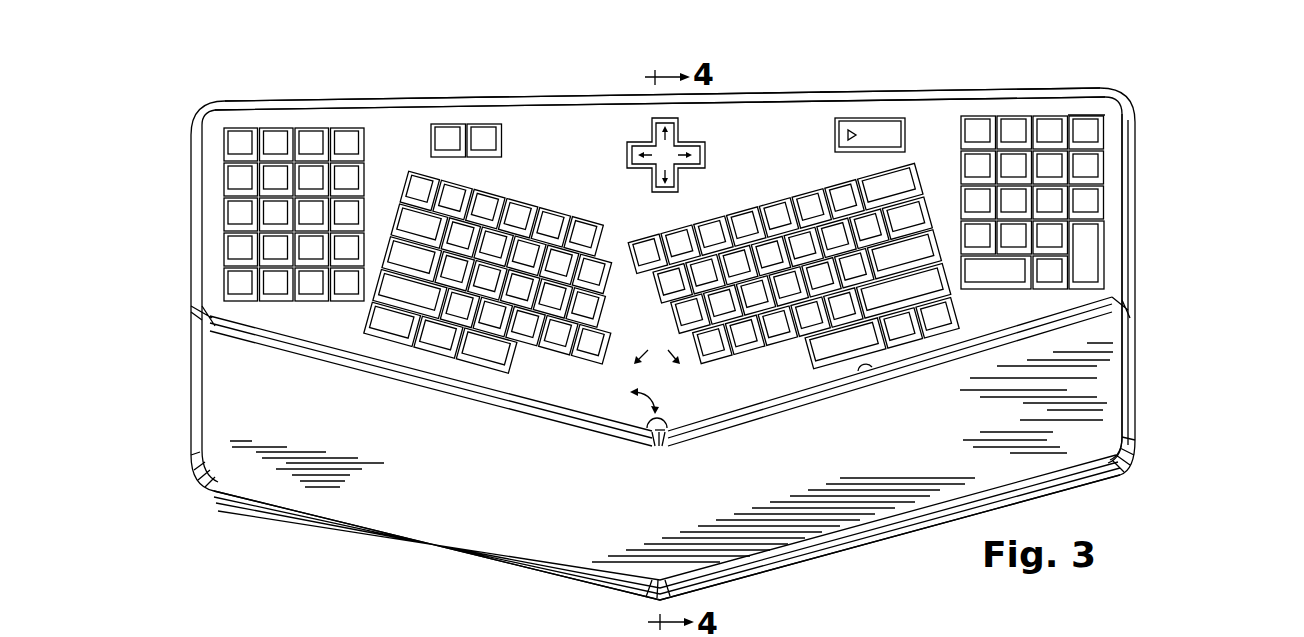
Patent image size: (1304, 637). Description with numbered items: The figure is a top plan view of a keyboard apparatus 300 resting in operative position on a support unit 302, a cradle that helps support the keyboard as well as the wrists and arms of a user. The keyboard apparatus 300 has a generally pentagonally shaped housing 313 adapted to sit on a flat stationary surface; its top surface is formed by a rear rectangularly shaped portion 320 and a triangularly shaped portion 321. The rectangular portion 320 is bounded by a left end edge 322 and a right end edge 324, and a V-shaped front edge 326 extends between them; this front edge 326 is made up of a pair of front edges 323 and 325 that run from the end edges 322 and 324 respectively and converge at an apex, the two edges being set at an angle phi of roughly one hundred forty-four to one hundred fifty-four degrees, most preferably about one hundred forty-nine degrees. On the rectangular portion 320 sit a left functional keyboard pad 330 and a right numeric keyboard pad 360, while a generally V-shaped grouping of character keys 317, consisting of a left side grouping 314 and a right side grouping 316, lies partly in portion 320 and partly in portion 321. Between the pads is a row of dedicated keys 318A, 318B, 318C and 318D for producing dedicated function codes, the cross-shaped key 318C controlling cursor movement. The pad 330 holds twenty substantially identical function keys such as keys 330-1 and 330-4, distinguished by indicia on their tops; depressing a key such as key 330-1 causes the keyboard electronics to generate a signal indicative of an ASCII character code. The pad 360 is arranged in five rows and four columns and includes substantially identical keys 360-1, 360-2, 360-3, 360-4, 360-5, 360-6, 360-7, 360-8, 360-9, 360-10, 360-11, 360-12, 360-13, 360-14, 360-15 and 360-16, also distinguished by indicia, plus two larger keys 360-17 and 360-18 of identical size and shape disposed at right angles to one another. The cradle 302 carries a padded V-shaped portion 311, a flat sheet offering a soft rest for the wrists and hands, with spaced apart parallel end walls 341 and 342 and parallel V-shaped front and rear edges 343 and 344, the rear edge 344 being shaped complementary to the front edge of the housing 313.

The keyboard apparatus 300 is at (560, 86).
The support unit 302 is at (1118, 475).
The padded V-shaped portion 311 is at (345, 480).
The housing 313 is at (437, 99).
The left side grouping 314 is at (580, 170).
The right side grouping 316 is at (787, 176).
The grouping of character keys 317 is at (822, 90).
The dedicated key 318A is at (450, 124).
The dedicated key 318B is at (481, 124).
The cross-shaped key 318C is at (672, 120).
The dedicated key 318D is at (864, 118).
The rear rectangularly shaped portion 320 is at (567, 102).
The triangularly shaped portion 321 is at (286, 322).
The left end edge 322 is at (200, 158).
The front edge 323 is at (463, 370).
The right end edge 324 is at (1140, 112).
The front edge 325 is at (877, 390).
The V-shaped front edge 326 is at (673, 440).
The left numerical keyboard pad 330 is at (319, 174).
The special function key 330-1 is at (245, 140).
The function key 330-4 is at (345, 140).
The end wall 341 is at (194, 455).
The end wall 342 is at (1128, 440).
The front edge 343 is at (788, 572).
The rear edge 344 is at (532, 412).
The numeric keyboard pad 360 is at (1064, 203).
The numeric key 360-1 is at (975, 117).
The numeric key 360-2 is at (1012, 117).
The numeric key 360-3 is at (1052, 117).
The numeric key 360-4 is at (1090, 128).
The numeric key 360-5 is at (1020, 168).
The numeric key 360-6 is at (1097, 117).
The numeric key 360-7 is at (1055, 165).
The numeric key 360-8 is at (1092, 170).
The numeric key 360-9 is at (968, 168).
The numeric key 360-10 is at (1090, 207).
The numeric key 360-11 is at (1052, 203).
The numeric key 360-12 is at (1018, 198).
The numeric key 360-13 is at (975, 205).
The numeric key 360-14 is at (985, 233).
The numeric key 360-15 is at (1022, 236).
The numeric key 360-16 is at (1050, 288).
The larger key 360-17 is at (1087, 288).
The larger key 360-18 is at (1058, 243).